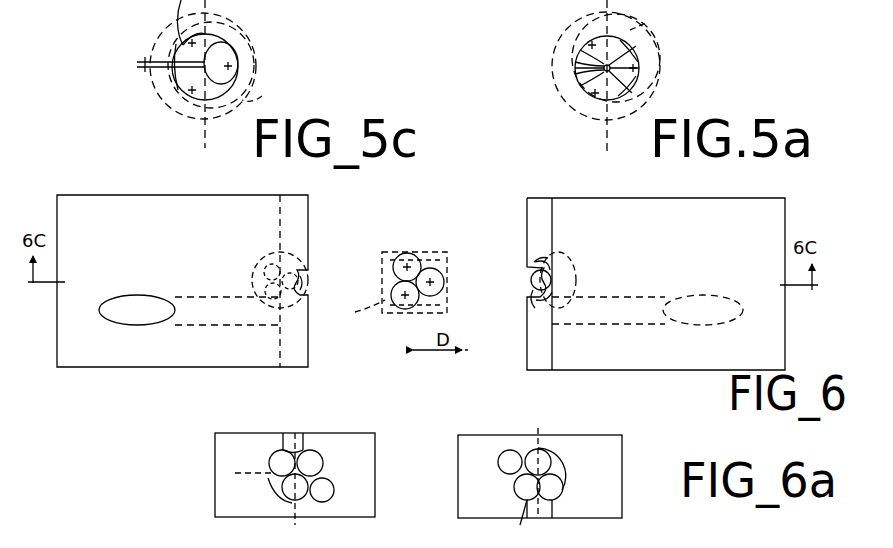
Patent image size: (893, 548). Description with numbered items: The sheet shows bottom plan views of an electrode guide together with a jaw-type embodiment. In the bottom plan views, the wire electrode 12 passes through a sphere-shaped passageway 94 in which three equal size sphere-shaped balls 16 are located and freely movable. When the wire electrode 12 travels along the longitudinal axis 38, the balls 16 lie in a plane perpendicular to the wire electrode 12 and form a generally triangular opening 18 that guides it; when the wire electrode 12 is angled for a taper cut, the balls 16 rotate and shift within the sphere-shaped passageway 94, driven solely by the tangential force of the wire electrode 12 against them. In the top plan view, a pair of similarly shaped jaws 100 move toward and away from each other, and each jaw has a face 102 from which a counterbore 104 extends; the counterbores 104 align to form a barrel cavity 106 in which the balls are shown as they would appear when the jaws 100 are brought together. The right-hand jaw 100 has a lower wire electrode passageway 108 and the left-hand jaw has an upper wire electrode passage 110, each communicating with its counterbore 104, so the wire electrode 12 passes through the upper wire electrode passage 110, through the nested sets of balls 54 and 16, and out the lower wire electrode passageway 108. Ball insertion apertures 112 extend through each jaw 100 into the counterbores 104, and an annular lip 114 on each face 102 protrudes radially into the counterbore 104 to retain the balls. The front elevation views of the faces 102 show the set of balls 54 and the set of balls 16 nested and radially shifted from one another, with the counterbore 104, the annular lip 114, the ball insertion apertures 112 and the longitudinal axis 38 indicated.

In FIG. 5C, the wire electrode 12 is at (145, 62).
In FIG. 5A, the wire electrode 12 is at (640, 50).
In FIG. 5C, the balls 16 is at (228, 50).
In FIG. 5A, the balls 16 is at (586, 47).
In FIG. 6, the balls 16 is at (268, 265).
In FIG. 6A, the balls 16 is at (300, 495).
In FIG. 5A, the triangular opening 18 is at (632, 72).
In FIG. 6A, the longitudinal axis 38 is at (293, 430).
In FIG. 6, the balls 54 is at (284, 280).
In FIG. 6A, the balls 54 is at (280, 462).
In FIG. 5C, the sphere-shaped passageway 94 is at (260, 97).
In FIG. 5A, the sphere-shaped passageway 94 is at (634, 40).
In FIG. 6, the jaws 100 is at (128, 208).
In FIG. 6, the faces 102 is at (295, 340).
In FIG. 6A, the faces 102 is at (350, 450).
In FIG. 6A, the counterbores 104 is at (270, 485).
In FIG. 6, the barrel cavity 106 is at (425, 245).
In FIG. 6, the lower wire electrode passageway 108 is at (524, 288).
In FIG. 6, the upper wire electrode passage 110 is at (305, 275).
In FIG. 6A, the upper wire electrode passage 110 is at (300, 435).
In FIG. 6, the ball insertion apertures 112 is at (145, 312).
In FIG. 6A, the ball insertion apertures 112 is at (333, 492).
In FIG. 6, the annular lip 114 is at (540, 256).
In FIG. 6A, the annular lip 114 is at (275, 500).